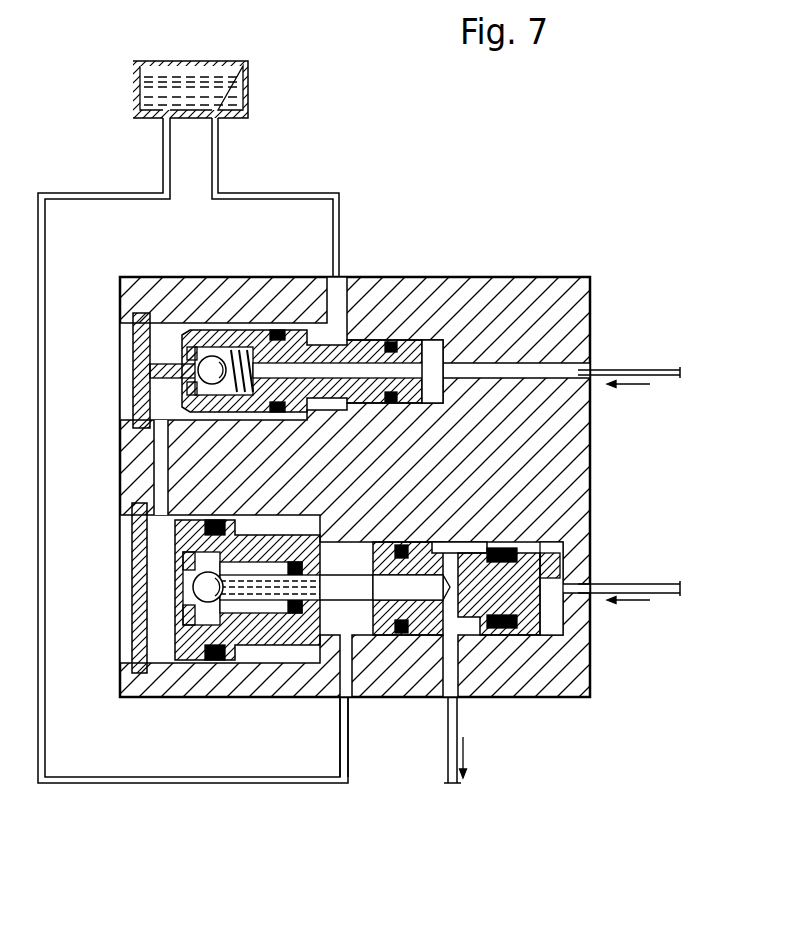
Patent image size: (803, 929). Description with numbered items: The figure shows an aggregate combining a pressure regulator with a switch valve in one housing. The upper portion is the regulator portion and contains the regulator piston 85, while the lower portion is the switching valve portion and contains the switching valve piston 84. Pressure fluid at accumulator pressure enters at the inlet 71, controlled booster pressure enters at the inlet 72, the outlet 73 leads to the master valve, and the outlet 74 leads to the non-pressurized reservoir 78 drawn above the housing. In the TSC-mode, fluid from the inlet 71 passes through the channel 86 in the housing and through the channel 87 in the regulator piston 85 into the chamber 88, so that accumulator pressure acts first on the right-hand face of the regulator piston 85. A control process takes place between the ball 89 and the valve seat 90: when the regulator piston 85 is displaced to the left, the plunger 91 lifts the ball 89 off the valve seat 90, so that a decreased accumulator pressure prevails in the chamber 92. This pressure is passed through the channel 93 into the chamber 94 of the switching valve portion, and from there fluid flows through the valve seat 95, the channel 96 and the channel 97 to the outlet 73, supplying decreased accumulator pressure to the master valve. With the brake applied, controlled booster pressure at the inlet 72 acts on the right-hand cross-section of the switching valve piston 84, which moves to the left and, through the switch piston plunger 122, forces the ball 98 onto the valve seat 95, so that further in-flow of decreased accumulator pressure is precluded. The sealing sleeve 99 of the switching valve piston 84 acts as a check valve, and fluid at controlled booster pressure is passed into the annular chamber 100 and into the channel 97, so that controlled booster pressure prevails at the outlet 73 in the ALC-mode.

The inlet 71 is at (590, 370).
The inlet 72 is at (590, 587).
The outlet 73 is at (448, 700).
The outlet 74 is at (218, 168).
The reservoir 78 is at (248, 82).
The switching valve piston 84 is at (535, 600).
The regulator piston 85 is at (298, 348).
The channel 86 is at (490, 370).
The channel 87 is at (372, 370).
The chamber 88 is at (240, 340).
The ball 89 is at (212, 356).
The valve seat 90 is at (180, 353).
The plunger 91 is at (183, 352).
The chamber 92 is at (167, 395).
The channel 93 is at (153, 474).
The chamber 94 is at (160, 545).
The valve seat 95 is at (190, 600).
The channel 96 is at (275, 640).
The channel 97 is at (465, 600).
The ball 98 is at (212, 662).
The sealing sleeve 99 is at (505, 630).
The annular chamber 100 is at (432, 640).
The switch piston plunger 122 is at (348, 660).